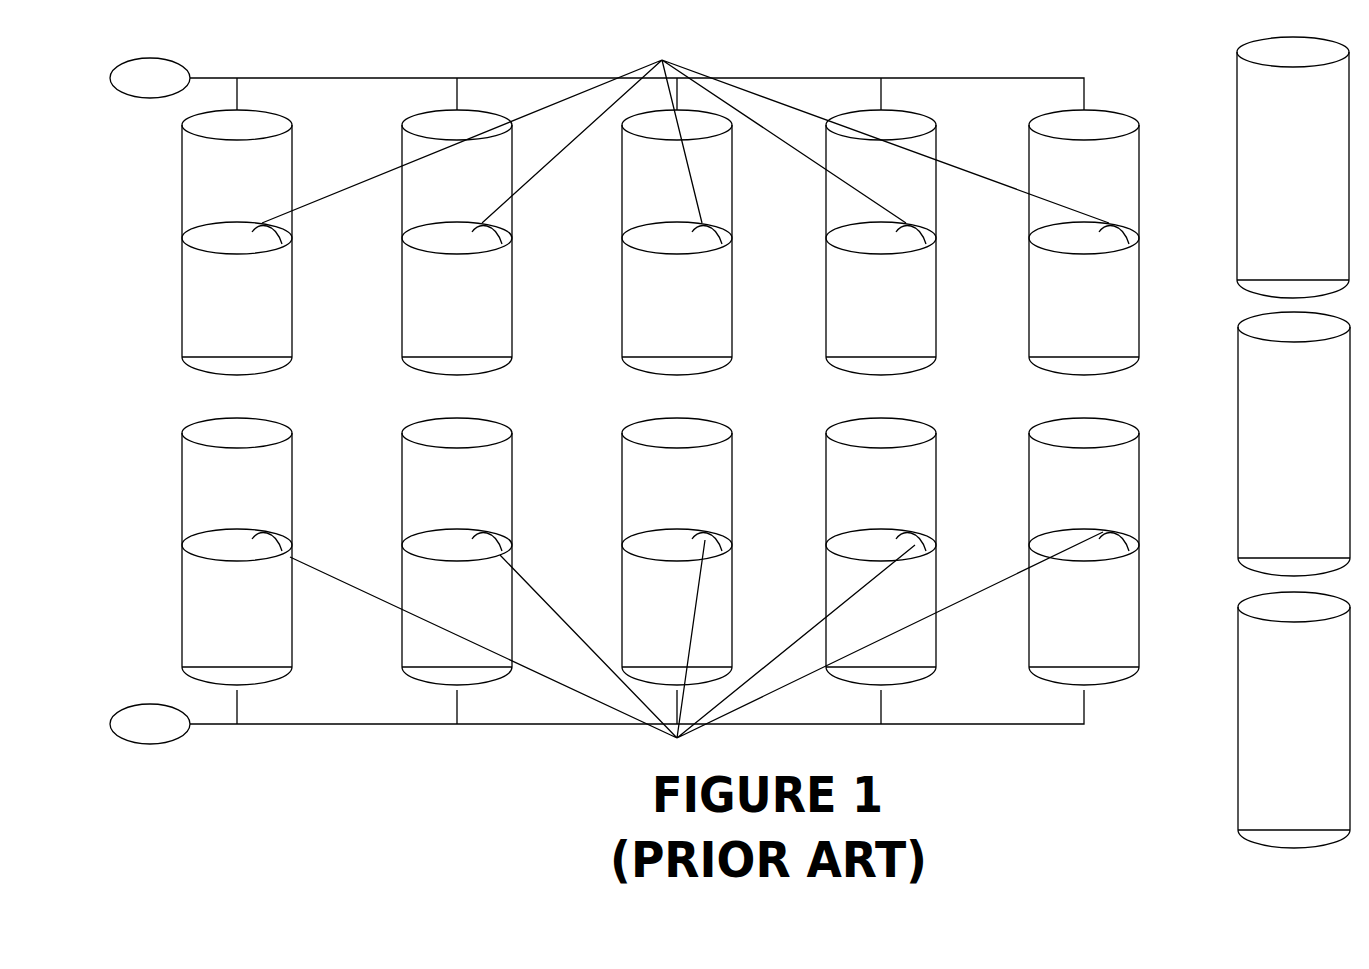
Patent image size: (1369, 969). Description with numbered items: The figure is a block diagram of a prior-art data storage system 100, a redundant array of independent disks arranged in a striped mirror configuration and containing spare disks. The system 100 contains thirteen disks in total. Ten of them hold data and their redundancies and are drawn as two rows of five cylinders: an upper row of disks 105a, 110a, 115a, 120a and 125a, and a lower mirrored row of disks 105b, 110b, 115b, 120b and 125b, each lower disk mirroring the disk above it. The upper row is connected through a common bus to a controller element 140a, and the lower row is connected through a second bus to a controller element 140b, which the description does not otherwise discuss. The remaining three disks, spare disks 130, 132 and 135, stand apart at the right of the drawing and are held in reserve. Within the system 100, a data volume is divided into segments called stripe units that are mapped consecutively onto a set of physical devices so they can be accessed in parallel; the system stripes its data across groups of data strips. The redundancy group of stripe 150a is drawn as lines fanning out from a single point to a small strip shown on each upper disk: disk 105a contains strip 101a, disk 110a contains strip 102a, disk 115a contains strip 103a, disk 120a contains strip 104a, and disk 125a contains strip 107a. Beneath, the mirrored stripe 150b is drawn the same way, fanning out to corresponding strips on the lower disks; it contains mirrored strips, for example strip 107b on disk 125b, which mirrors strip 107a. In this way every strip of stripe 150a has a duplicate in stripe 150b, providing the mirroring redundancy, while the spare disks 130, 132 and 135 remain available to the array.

The data storage system 100 is at (282, 52).
The controller/bus a 140a is at (172, 90).
The controller/bus b 140b is at (172, 736).
The disk 105a is at (261, 351).
The disk 110a is at (481, 351).
The disk 115a is at (701, 351).
The disk 120a is at (905, 351).
The disk 125a is at (1109, 351).
The disk 105b is at (261, 662).
The disk 110b is at (460, 662).
The disk 115b is at (678, 662).
The disk 120b is at (934, 657).
The disk 125b is at (1110, 659).
The strip 101a is at (287, 242).
The strip 102a is at (507, 242).
The strip 103a is at (727, 242).
The strip 104a is at (923, 230).
The strip 107a is at (1132, 242).
The strip 107b is at (1128, 543).
The stripe 150a is at (685, 130).
The mirrored stripe 150b is at (696, 649).
The spare disk 130 is at (1274, 205).
The spare disk 132 is at (1275, 481).
The spare disk 135 is at (1275, 770).